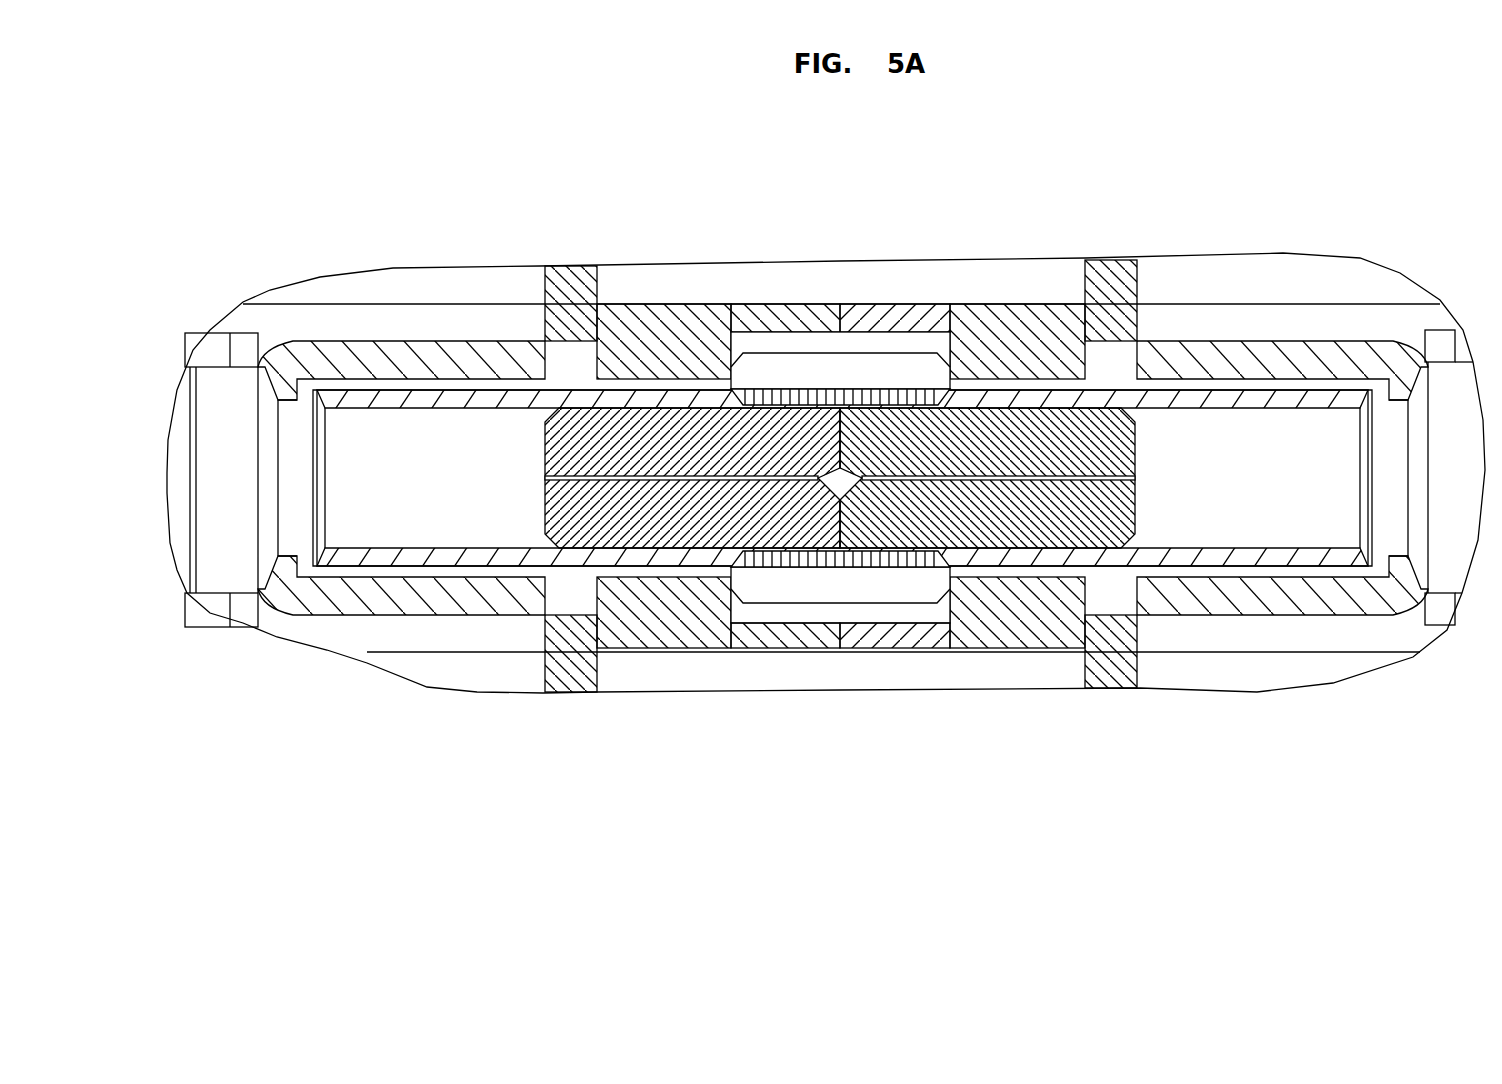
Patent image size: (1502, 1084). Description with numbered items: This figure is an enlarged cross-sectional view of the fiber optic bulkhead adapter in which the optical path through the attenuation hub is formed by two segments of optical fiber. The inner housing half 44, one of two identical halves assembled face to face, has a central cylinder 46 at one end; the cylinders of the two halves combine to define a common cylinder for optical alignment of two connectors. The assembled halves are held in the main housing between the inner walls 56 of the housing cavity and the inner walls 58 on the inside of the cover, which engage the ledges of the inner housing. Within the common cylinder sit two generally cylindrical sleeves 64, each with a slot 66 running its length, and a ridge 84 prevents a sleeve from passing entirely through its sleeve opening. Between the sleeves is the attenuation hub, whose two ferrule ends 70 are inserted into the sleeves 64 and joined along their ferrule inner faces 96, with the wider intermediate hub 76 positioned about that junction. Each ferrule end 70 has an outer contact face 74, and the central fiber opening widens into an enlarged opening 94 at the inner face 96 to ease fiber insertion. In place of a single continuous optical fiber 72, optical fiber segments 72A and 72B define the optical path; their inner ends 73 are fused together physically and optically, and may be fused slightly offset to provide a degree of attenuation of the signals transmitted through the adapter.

The inner housing half 44 is at (312, 600).
The central cylinder 46 is at (1340, 600).
The inner walls 56 is at (575, 285).
The inner walls 58 is at (563, 673).
The sleeve 64 is at (353, 502).
The slot 66 is at (382, 555).
The ferrule end 70 is at (999, 338).
The optical fiber 72 is at (804, 335).
The optical fiber segment 72A is at (835, 478).
The optical fiber segment 72B is at (847, 477).
The inner ends 73 is at (837, 477).
The contact face 74 is at (543, 515).
The intermediate hub 76 is at (1117, 472).
The ridge 84 is at (1388, 567).
The opening 94 is at (833, 487).
The ferrule inner face 96 is at (843, 473).